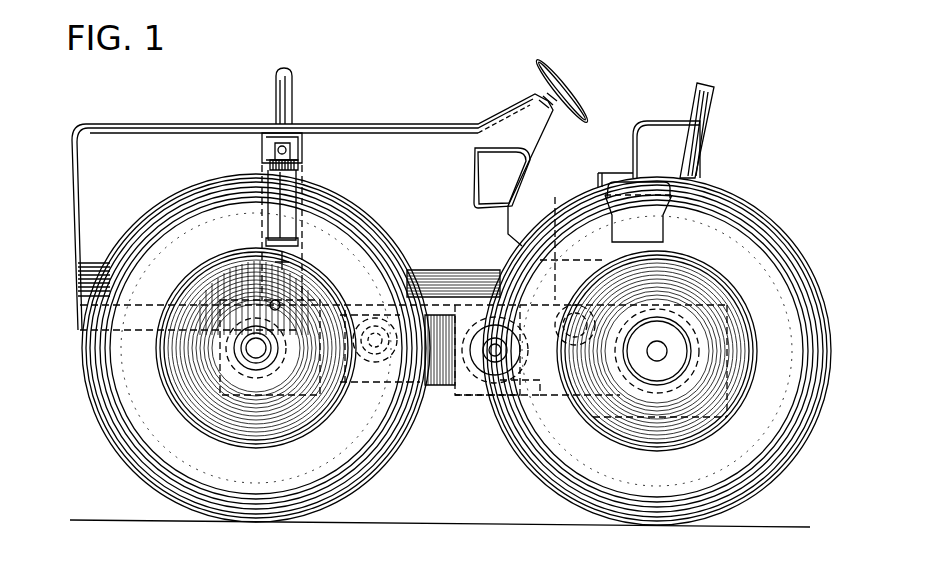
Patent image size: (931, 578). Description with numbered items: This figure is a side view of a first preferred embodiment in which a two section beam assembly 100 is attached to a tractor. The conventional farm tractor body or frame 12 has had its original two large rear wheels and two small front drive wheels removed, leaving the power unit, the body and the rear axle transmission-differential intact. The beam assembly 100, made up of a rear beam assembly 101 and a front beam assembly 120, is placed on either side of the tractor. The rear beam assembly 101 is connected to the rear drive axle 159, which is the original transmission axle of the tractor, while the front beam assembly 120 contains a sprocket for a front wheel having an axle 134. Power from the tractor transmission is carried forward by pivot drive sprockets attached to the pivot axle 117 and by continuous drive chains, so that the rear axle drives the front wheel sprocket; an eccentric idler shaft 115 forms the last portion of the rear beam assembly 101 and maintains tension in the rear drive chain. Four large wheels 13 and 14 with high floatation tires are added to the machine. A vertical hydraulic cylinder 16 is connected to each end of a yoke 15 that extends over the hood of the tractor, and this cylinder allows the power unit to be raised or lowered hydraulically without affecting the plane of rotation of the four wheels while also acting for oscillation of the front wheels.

The tractor body or frame 12 is at (222, 125).
The large wheel 13 is at (106, 252).
The large wheel 14 is at (805, 234).
The yoke 15 is at (293, 90).
The vertical hydraulic cylinder 16 is at (310, 200).
The beam assembly 100 is at (437, 402).
The rear beam assembly 101 is at (540, 404).
The eccentric idler shaft 115 is at (410, 268).
The pivot axle 117 is at (480, 368).
The front beam assembly 120 is at (370, 398).
The front wheel axle 134 is at (252, 348).
The rear drive axle 159 is at (657, 351).